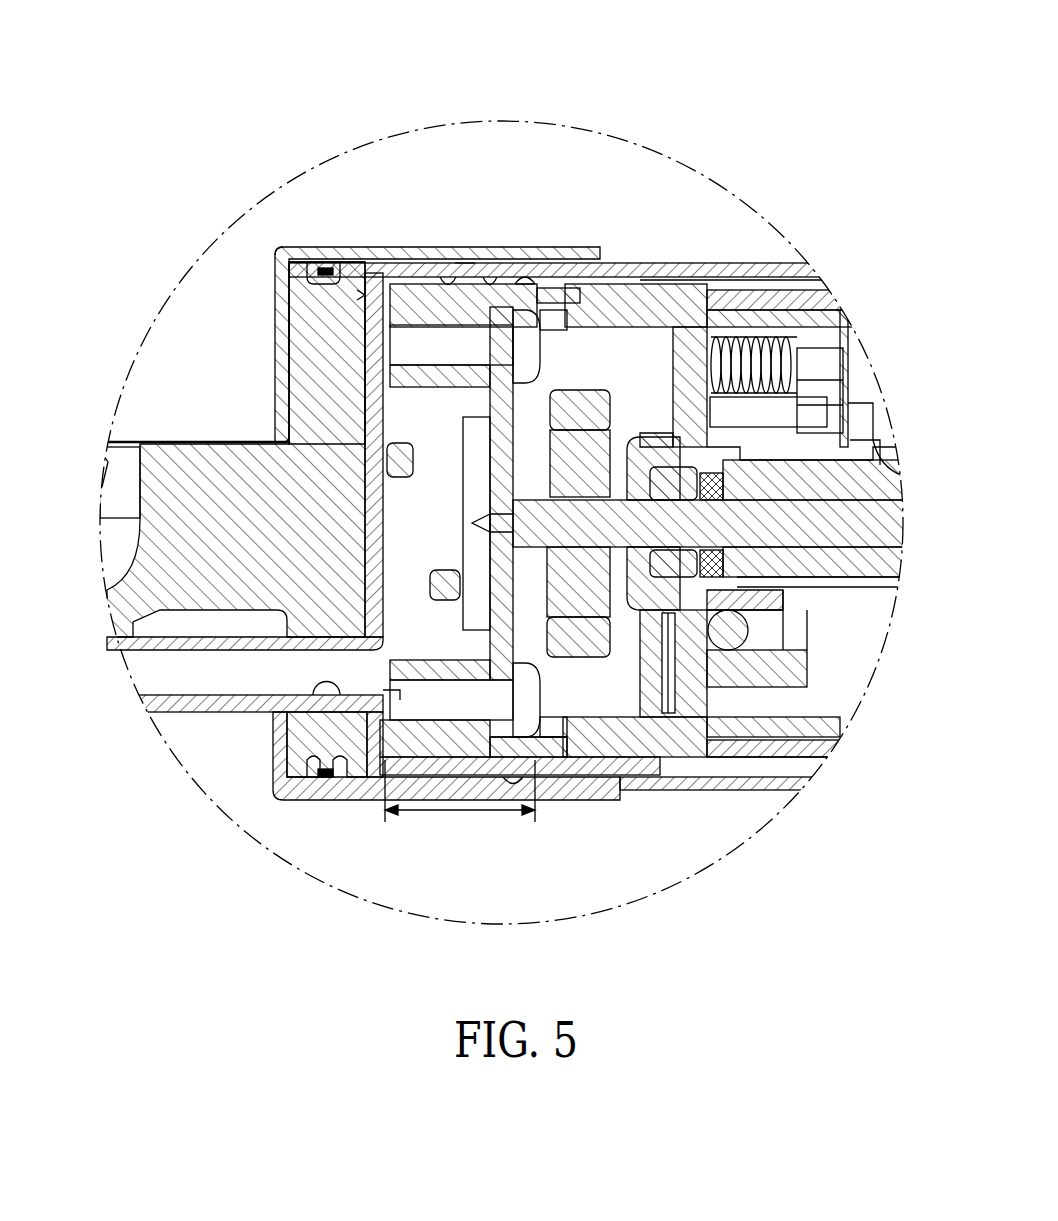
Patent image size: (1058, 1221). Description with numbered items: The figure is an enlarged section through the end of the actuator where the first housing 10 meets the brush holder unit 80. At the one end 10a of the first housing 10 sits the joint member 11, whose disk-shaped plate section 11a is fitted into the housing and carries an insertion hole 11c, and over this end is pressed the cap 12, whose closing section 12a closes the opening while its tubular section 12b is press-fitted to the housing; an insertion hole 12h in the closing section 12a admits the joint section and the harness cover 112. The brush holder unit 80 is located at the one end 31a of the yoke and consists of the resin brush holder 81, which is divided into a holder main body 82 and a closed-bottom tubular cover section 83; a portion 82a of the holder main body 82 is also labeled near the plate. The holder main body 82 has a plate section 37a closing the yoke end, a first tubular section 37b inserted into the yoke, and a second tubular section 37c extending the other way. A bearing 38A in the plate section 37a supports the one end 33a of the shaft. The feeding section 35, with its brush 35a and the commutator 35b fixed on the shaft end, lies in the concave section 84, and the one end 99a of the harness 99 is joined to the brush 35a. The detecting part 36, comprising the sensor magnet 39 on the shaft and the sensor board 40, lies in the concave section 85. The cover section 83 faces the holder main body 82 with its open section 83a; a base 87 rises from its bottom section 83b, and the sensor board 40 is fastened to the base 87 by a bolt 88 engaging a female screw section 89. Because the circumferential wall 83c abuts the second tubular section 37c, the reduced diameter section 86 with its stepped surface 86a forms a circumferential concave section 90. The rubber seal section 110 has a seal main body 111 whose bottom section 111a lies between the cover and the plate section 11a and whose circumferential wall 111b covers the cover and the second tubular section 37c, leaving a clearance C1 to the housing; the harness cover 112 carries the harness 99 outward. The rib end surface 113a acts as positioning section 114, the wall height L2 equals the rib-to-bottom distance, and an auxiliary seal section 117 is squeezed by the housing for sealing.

The first housing 10 is at (785, 798).
The one end of the first housing 10a is at (361, 801).
The joint member 11 is at (106, 437).
The plate section 11a is at (302, 337).
The insertion hole 11c is at (323, 778).
The cap 12 is at (339, 244).
The closing section 12a is at (276, 262).
The tubular section 12b is at (357, 249).
The insertion hole 12h is at (284, 430).
The one end of the yoke 31a is at (792, 758).
The one end of the shaft 33a is at (660, 523).
The feeding section 35 is at (844, 351).
The brush 35a is at (850, 446).
The commutator 35b is at (735, 578).
The detecting part 36 is at (408, 563).
The plate section 37a is at (708, 772).
The first tubular section 37b is at (766, 742).
The second tubular section 37c is at (592, 760).
The bearing 38A is at (708, 700).
The sensor magnet 39 is at (617, 403).
The sensor board 40 is at (492, 593).
The brush holder unit 80 is at (660, 254).
The brush holder 81 is at (574, 171).
The holder main body 82 is at (637, 272).
The upper plate step 82a is at (752, 305).
The cover section 83 is at (465, 283).
The open section 83a is at (490, 298).
The bottom section 83b is at (327, 280).
The circumferential wall 83c is at (455, 298).
The concave section 84 is at (762, 745).
The concave section 85 is at (673, 645).
The reduced diameter section 86 is at (567, 745).
The stepped surface 86a is at (578, 298).
The base 87 is at (397, 285).
The bolt 88 is at (543, 345).
The female screw section 89 is at (402, 690).
The concave section 90 is at (544, 822).
The harness 99 is at (818, 685).
The one end of the harness 99a is at (742, 635).
The seal section 110 is at (312, 455).
The seal main body 111 is at (355, 333).
The bottom section 111a is at (357, 393).
The circumferential wall 111b is at (462, 275).
The harness cover 112 is at (210, 713).
The end surface of the rib 113a is at (525, 298).
The positioning section 114 is at (535, 226).
The auxiliary seal section 117 is at (513, 782).
The clearance C1 is at (777, 281).
The height of the circumferential wall L2 is at (460, 802).